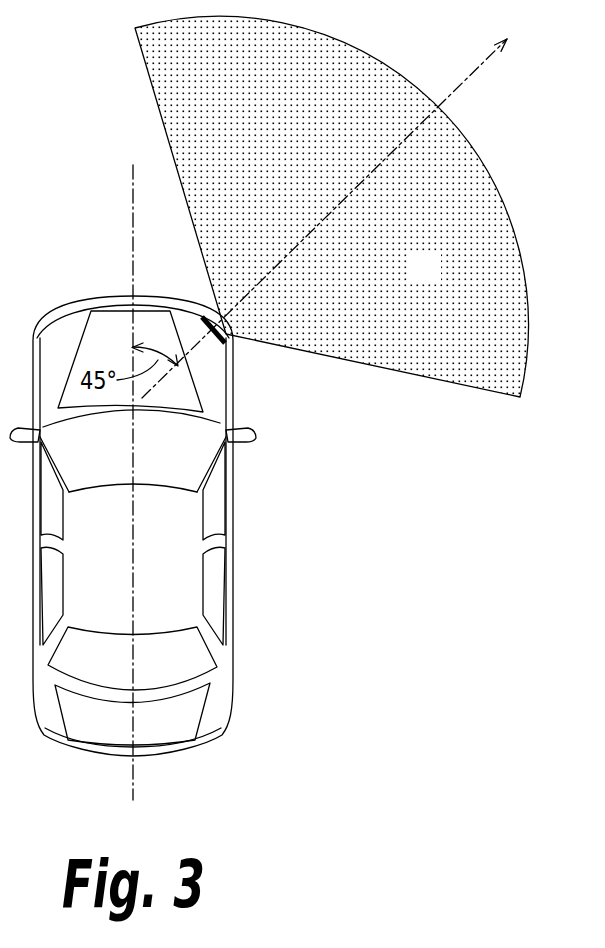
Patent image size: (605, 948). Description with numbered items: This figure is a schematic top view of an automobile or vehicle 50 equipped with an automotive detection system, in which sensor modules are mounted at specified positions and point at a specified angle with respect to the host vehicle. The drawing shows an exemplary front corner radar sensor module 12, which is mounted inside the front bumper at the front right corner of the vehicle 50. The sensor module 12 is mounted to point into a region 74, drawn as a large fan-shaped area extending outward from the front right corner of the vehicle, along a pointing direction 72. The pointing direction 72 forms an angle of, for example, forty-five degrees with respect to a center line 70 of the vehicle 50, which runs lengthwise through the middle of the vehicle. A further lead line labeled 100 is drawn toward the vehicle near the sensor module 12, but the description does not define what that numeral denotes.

The front corner radar sensor module 12 is at (230, 347).
The vehicle 50 is at (233, 580).
The center line 70 is at (133, 780).
The pointing direction 72 is at (466, 80).
The region 74 is at (437, 278).
The sensor system 100 is at (260, 400).